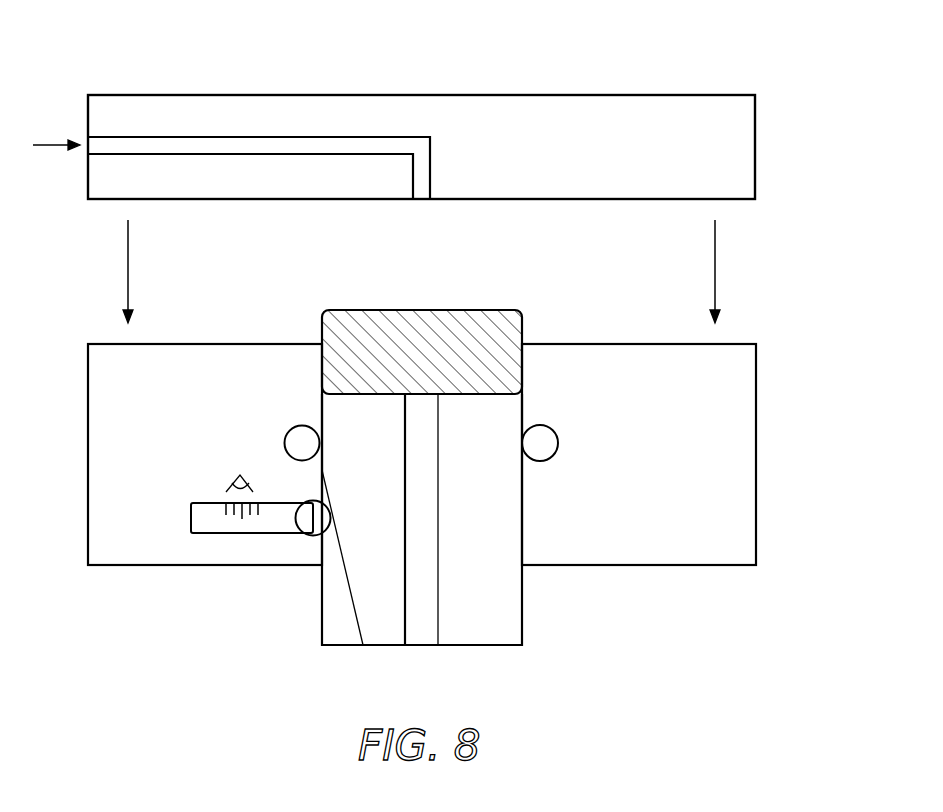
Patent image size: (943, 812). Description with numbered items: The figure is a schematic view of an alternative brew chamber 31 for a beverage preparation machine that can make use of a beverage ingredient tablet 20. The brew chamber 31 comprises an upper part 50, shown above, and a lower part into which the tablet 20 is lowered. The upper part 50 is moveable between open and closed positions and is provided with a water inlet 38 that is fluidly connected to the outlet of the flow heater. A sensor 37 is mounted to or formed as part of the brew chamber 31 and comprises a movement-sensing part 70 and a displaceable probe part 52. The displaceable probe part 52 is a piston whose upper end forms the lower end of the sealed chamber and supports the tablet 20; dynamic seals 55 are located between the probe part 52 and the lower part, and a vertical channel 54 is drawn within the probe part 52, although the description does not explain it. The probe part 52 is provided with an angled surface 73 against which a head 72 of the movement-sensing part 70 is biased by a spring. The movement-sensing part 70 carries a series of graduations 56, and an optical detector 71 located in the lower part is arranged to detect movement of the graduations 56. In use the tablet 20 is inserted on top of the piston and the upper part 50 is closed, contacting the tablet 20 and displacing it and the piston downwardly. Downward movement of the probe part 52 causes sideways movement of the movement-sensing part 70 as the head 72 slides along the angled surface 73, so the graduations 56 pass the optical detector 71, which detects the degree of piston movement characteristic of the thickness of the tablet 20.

The beverage ingredient tablet 20 is at (418, 320).
The brew chamber 31 is at (660, 68).
The sensor 37 is at (220, 650).
The water inlet 38 is at (56, 143).
The upper part 50 is at (745, 105).
The displaceable probe part 52 is at (513, 631).
The channel 54 is at (430, 582).
The dynamic seals 55 is at (548, 443).
The graduations 56 is at (247, 534).
The movement-sensing part 70 is at (200, 517).
The optical detector 71 is at (240, 475).
The head 72 is at (325, 518).
The angled surface 73 is at (357, 626).